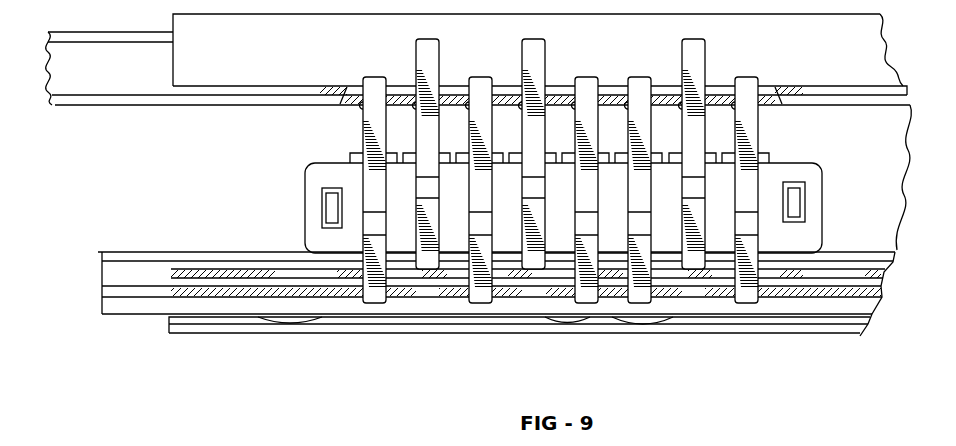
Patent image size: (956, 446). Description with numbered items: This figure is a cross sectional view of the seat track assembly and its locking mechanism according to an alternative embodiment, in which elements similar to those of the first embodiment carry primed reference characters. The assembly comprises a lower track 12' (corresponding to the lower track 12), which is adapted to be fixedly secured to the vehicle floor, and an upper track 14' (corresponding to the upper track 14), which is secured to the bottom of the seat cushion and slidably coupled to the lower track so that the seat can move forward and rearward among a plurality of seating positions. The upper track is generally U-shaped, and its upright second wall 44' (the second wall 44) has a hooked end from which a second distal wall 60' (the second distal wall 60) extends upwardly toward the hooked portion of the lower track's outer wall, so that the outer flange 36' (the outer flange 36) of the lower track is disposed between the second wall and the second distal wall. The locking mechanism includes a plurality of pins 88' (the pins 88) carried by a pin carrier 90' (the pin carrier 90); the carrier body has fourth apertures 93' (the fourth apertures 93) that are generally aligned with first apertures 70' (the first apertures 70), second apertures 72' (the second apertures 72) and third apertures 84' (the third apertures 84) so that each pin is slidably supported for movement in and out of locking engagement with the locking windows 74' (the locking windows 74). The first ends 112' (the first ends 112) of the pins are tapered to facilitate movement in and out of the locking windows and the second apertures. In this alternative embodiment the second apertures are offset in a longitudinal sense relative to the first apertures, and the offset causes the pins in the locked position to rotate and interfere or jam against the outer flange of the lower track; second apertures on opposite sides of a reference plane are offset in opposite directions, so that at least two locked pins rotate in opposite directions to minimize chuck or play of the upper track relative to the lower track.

The pin 88' is at (542, 164).
The third support aperture 84' is at (540, 120).
The fourth support aperture 93' is at (553, 173).
The first support aperture 70' is at (496, 237).
The locking window 74' is at (497, 242).
The pin carrier 90' is at (585, 195).
The second support aperture 72' is at (519, 322).
The first end of pin 112' is at (554, 338).
The upper track 14' is at (462, 292).
The second wall 44' is at (461, 269).
The second distal wall 60' is at (492, 324).
The lower track 12' is at (493, 247).
The outer flange 36' is at (493, 247).
The pin 88 is at (542, 164).
The third aperture 84 is at (540, 120).
The fourth aperture 93 is at (553, 173).
The first aperture 70 is at (496, 237).
The locking window 74 is at (497, 242).
The pin carrier 90 is at (585, 195).
The second aperture 72 is at (519, 322).
The first end of pin 112 is at (554, 338).
The upper track 14 is at (462, 292).
The second wall 44 is at (461, 269).
The second distal wall 60 is at (492, 324).
The lower track 12 is at (493, 247).
The outer flange 36 is at (493, 247).